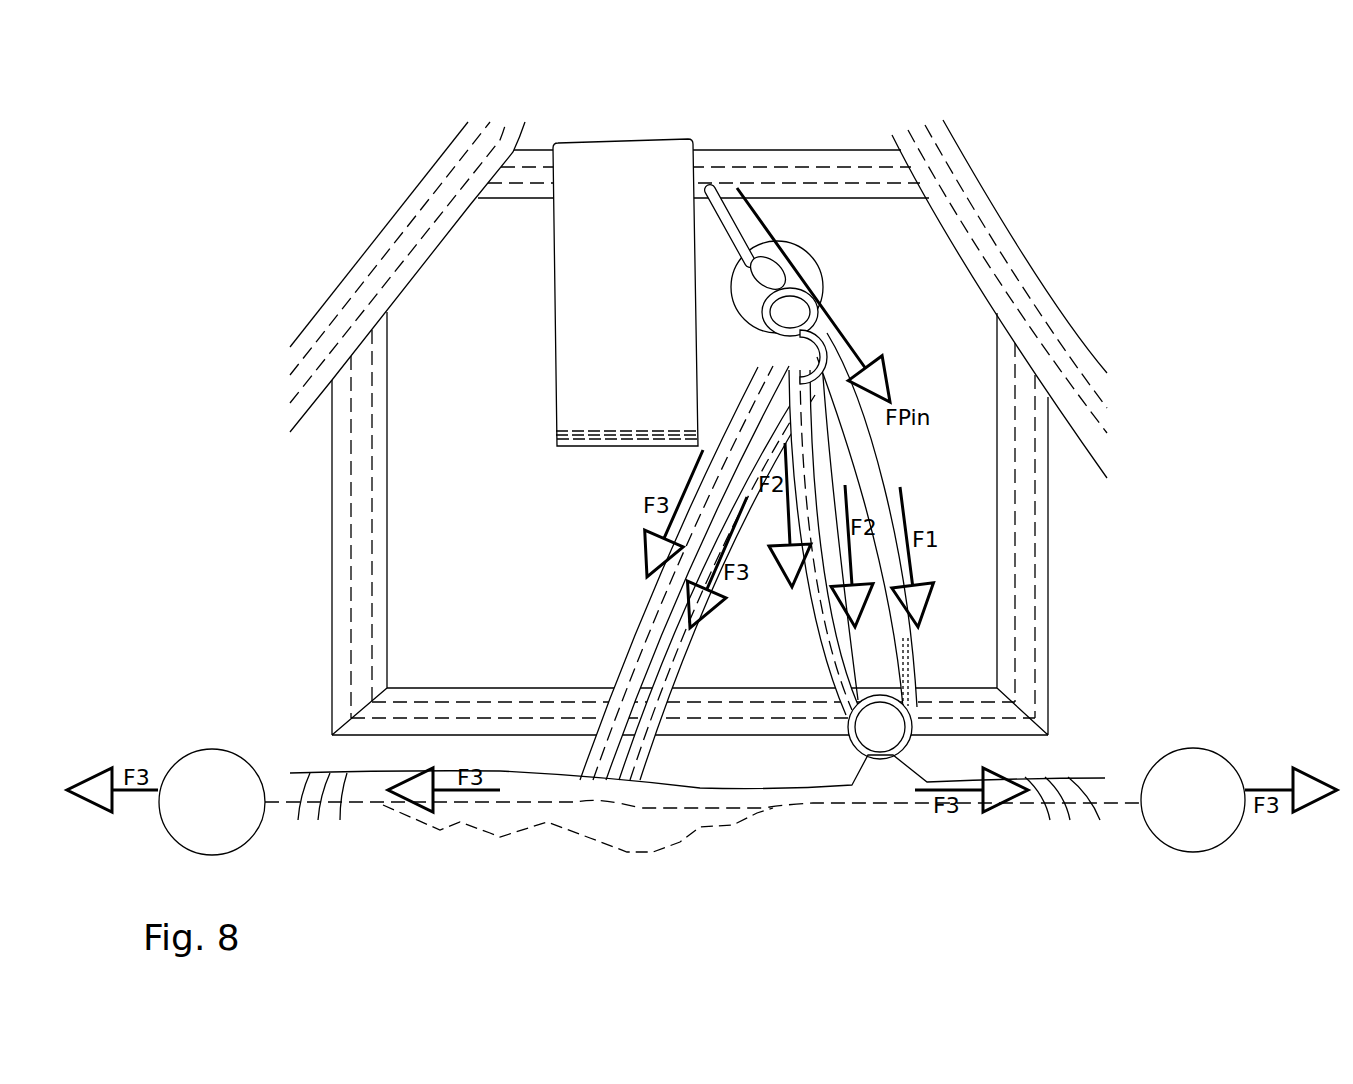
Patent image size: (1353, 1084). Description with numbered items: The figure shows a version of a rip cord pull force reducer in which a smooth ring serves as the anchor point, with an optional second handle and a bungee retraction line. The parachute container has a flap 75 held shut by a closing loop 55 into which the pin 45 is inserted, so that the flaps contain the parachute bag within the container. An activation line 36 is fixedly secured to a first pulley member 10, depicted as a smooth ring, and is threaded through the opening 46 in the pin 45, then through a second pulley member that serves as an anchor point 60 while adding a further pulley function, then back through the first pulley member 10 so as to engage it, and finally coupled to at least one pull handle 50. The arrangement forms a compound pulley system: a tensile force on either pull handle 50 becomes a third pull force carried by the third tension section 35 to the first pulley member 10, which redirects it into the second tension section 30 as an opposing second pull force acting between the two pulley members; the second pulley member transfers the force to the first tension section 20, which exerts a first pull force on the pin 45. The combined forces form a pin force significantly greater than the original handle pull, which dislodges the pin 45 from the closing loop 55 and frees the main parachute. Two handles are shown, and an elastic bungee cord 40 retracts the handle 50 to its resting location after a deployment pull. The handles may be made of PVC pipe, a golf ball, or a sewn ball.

The first pulley member 10 is at (913, 745).
The first tension section 20 is at (880, 485).
The second tension section 30 is at (800, 473).
The third tension section 35 is at (630, 660).
The activation line 36 is at (920, 660).
The bungee cord 40 is at (628, 850).
The pin 45 is at (823, 307).
The opening 46 is at (790, 310).
The pull handle 50 is at (193, 748).
The closing loop 55 is at (767, 267).
The anchor point 60 is at (900, 770).
The flap 75 is at (507, 230).